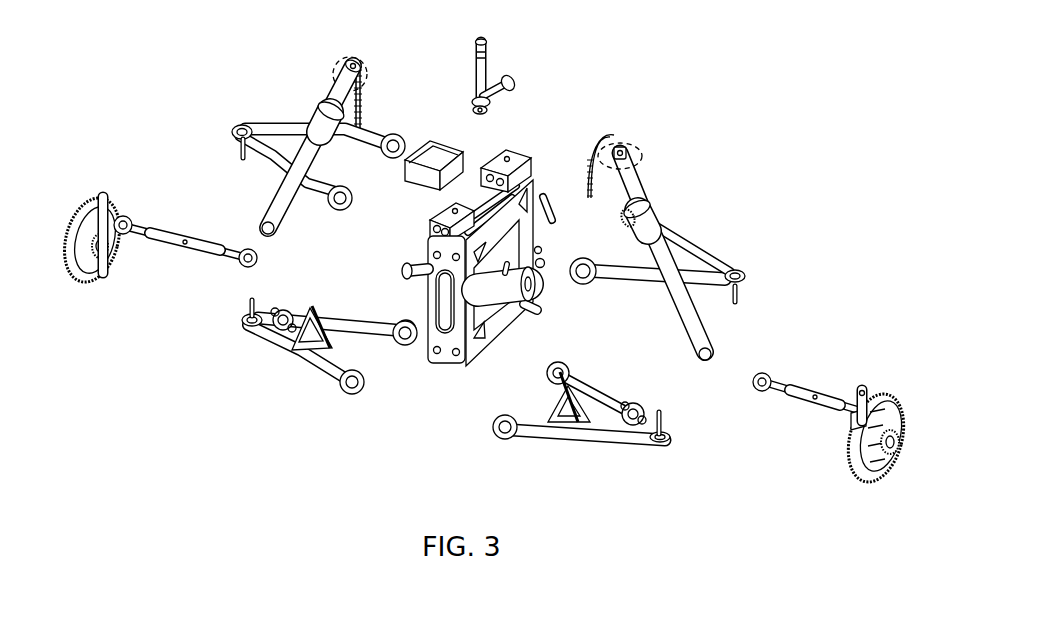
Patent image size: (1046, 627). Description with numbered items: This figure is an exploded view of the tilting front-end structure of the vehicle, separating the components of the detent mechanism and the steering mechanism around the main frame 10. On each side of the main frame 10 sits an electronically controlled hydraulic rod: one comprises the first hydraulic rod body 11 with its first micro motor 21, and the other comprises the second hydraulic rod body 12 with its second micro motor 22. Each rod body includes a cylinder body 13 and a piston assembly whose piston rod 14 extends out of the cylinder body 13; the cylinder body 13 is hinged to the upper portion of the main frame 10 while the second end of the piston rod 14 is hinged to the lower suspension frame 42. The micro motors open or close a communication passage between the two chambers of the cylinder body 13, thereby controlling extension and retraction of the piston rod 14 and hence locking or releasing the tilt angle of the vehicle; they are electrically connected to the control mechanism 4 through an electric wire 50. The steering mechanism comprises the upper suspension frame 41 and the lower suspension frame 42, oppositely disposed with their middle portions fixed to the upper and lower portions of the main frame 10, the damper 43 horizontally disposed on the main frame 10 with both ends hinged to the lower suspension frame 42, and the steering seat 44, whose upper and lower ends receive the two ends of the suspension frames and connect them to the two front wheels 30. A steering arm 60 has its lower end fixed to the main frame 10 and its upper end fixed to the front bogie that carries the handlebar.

The control mechanism 4 is at (437, 150).
The main frame 10 is at (462, 318).
The first hydraulic rod body 11 is at (656, 212).
The second hydraulic rod body 12 is at (318, 118).
The cylinder body 13 is at (634, 185).
The piston rod 14 is at (688, 308).
The first micro motor 21 is at (638, 140).
The second micro motor 22 is at (368, 72).
The front wheel 30 is at (85, 205).
The upper suspension frame 41 is at (270, 128).
The lower suspension frame 42 is at (300, 365).
The damper 43 is at (500, 296).
The steering seat 44 is at (866, 402).
The electric wire 50 is at (600, 138).
The steering arm 60 is at (486, 78).